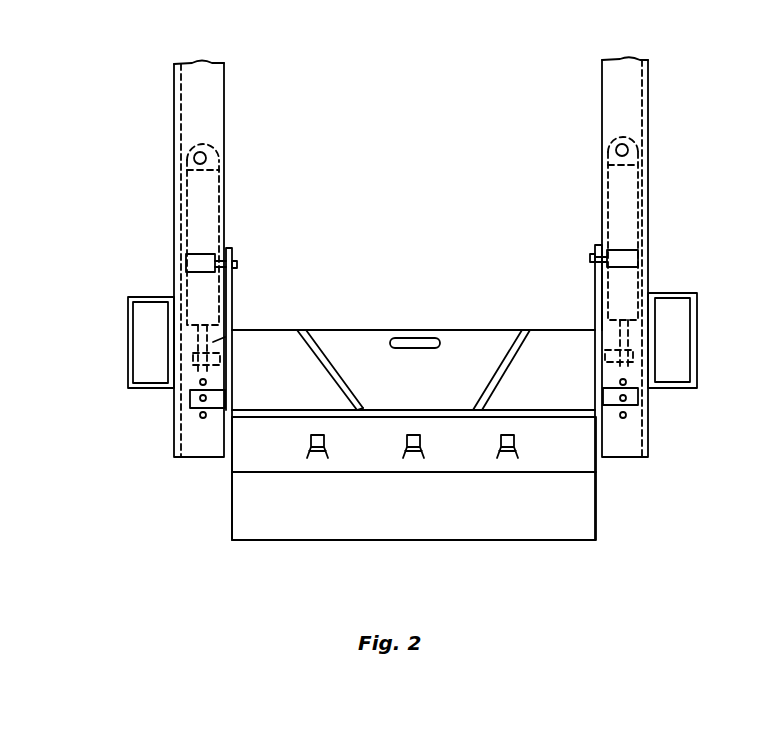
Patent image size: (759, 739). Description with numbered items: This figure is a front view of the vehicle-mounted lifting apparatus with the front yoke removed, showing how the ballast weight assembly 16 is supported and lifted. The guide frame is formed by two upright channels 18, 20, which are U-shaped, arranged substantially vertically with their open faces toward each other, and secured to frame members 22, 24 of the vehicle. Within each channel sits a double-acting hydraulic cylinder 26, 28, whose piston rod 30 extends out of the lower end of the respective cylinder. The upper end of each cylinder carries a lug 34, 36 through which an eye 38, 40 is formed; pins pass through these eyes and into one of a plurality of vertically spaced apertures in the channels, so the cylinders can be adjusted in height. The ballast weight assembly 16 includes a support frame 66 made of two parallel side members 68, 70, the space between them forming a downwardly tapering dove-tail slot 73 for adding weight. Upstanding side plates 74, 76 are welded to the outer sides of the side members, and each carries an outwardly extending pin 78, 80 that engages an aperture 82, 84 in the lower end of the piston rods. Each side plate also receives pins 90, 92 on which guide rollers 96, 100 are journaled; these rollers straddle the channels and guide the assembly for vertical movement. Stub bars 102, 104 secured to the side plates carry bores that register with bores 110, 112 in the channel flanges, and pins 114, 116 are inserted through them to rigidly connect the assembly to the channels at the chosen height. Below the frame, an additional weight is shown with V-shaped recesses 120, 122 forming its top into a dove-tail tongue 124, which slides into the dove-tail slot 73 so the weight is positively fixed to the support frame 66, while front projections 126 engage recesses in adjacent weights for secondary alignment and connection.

The ballast weight assembly 16 is at (611, 516).
The upright channel 18 is at (212, 94).
The upright channel 20 is at (635, 87).
The frame member 22 is at (150, 297).
The frame member 24 is at (661, 293).
The double-acting hydraulic cylinder 26 is at (219, 194).
The double-acting hydraulic cylinder 28 is at (607, 181).
The piston rod 30 is at (232, 332).
The lug 34 is at (205, 145).
The lug 36 is at (614, 138).
The eye 38 is at (206, 158).
The eye 40 is at (616, 150).
The support frame 66 is at (290, 340).
The side member 68 is at (312, 396).
The side member 70 is at (533, 396).
The dove-tail slot 73 is at (502, 366).
The side plate 74 is at (232, 292).
The side plate 76 is at (595, 292).
The pin 78 is at (222, 360).
The pin 80 is at (612, 356).
The aperture 82 is at (218, 368).
The aperture 84 is at (612, 370).
The pin 90 is at (237, 263).
The pin 92 is at (591, 257).
The guide roller 96 is at (198, 253).
The guide roller 100 is at (638, 258).
The stub bar 102 is at (190, 398).
The stub bar 104 is at (603, 395).
The bore 110 is at (200, 381).
The bore 112 is at (623, 418).
The pin 114 is at (201, 401).
The pin 116 is at (627, 398).
The V-shaped recess 120 is at (378, 394).
The V-shaped recess 122 is at (473, 410).
The dove-tail tongue 124 is at (367, 345).
The front projection 126 is at (403, 441).